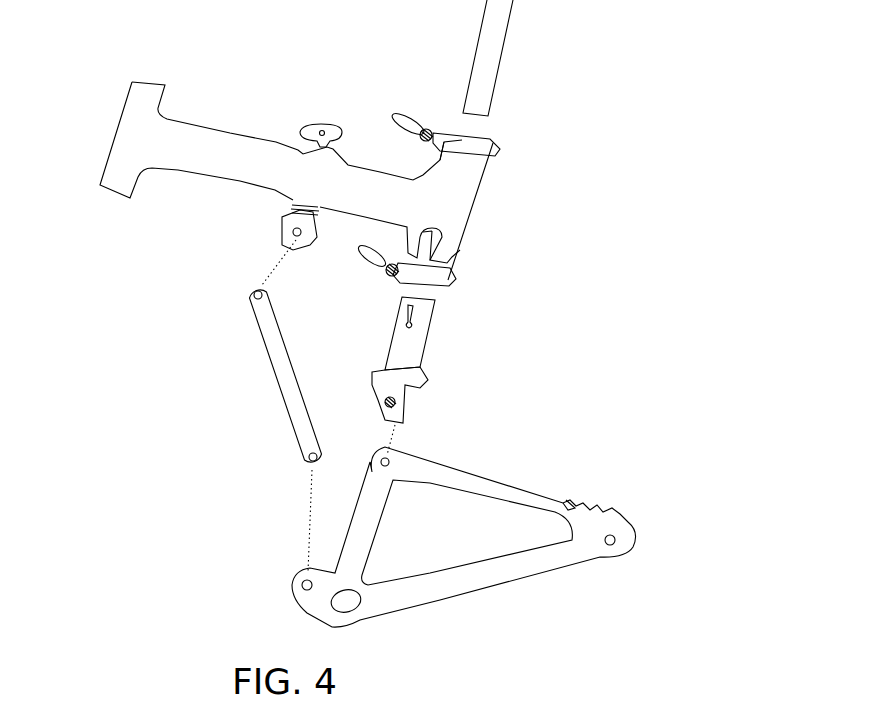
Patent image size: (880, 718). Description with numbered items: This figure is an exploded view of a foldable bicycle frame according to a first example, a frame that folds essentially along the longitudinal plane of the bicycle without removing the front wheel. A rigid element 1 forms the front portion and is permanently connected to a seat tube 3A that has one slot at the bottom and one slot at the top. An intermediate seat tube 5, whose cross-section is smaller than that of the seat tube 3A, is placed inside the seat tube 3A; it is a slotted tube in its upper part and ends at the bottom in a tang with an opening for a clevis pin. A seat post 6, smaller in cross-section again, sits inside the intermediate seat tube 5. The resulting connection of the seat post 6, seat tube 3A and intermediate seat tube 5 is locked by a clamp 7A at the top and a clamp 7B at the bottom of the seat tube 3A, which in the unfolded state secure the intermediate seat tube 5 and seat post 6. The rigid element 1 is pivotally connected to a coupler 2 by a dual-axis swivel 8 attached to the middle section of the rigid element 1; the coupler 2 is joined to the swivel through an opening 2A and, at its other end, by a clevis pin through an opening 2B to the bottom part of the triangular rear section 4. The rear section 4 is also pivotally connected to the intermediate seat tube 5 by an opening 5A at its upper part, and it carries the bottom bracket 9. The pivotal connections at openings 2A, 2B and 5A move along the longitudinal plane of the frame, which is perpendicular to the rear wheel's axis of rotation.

The rigid element 1 is at (262, 140).
The coupler 2 is at (275, 382).
The opening 2A is at (245, 298).
The opening 2B is at (307, 458).
The seat tube 3A is at (465, 217).
The rear section 4 is at (540, 478).
The intermediate seat tube 5 is at (420, 363).
The opening 5A is at (388, 462).
The seat post 6 is at (503, 52).
The clamp 7A is at (485, 147).
The clamp 7B is at (448, 282).
The dual-axis swivel 8 is at (283, 232).
The bottom bracket 9 is at (293, 602).